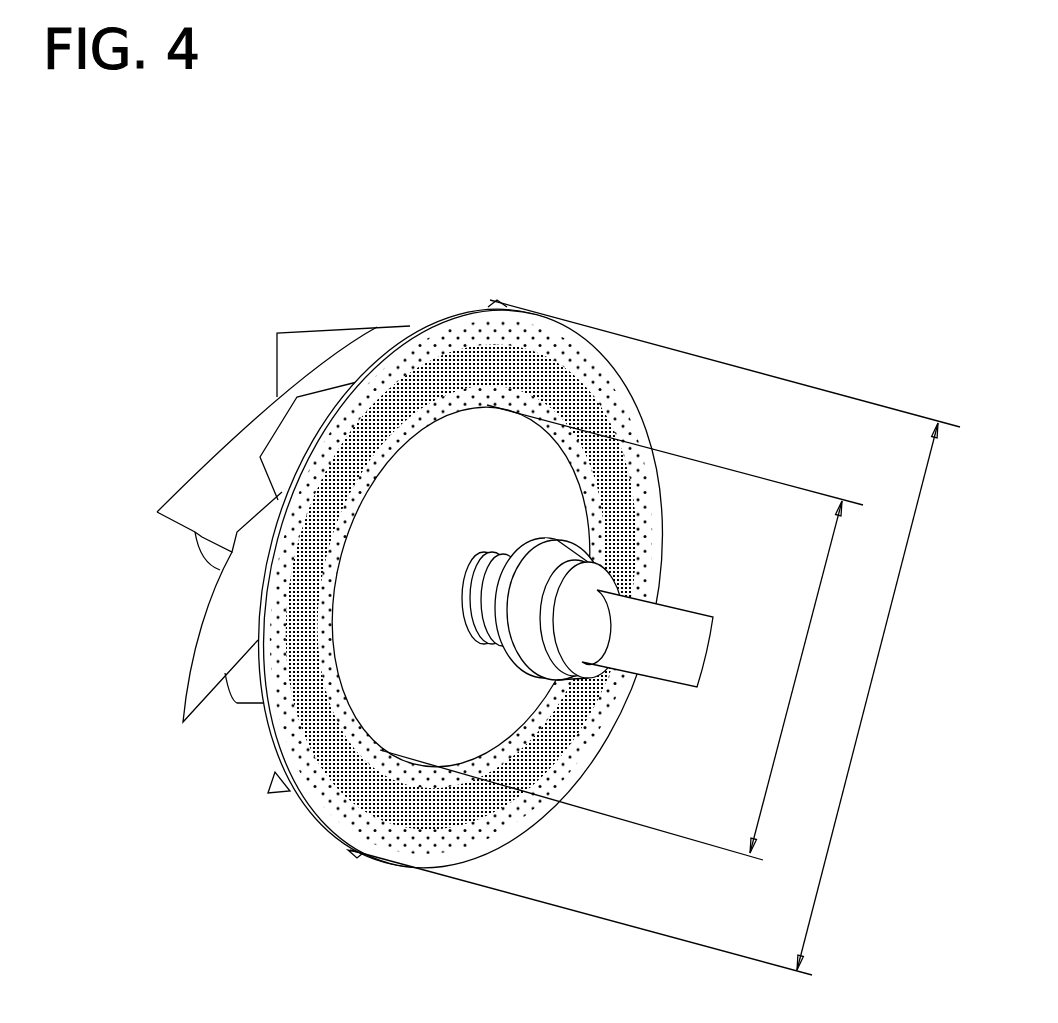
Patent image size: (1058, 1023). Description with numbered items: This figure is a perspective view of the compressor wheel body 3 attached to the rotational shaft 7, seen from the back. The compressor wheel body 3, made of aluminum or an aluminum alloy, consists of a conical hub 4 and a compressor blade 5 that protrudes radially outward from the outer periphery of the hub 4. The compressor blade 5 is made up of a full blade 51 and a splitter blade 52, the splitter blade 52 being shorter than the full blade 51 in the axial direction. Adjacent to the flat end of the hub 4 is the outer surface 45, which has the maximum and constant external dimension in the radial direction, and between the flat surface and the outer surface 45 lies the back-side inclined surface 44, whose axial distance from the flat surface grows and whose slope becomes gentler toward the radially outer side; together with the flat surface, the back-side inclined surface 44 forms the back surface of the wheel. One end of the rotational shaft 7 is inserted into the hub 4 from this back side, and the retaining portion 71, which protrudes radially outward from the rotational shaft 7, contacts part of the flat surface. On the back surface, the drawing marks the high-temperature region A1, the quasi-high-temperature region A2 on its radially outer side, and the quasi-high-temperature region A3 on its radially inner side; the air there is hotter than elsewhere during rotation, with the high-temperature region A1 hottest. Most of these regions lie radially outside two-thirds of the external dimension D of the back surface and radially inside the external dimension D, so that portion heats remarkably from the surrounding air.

The compressor wheel body 3 is at (219, 243).
The hub 4 is at (473, 304).
The back-side inclined surface 44 is at (520, 310).
The outer surface 45 is at (378, 327).
The compressor blade 5 is at (130, 363).
The full blade 51 is at (187, 471).
The splitter blade 52 is at (322, 331).
The rotational shaft 7 is at (700, 613).
The retaining portion 71 is at (499, 552).
The high-temperature region A1 is at (341, 781).
The quasi-high-temperature region A2 is at (387, 838).
The quasi-high-temperature region A3 is at (398, 770).
The external dimension D is at (802, 696).